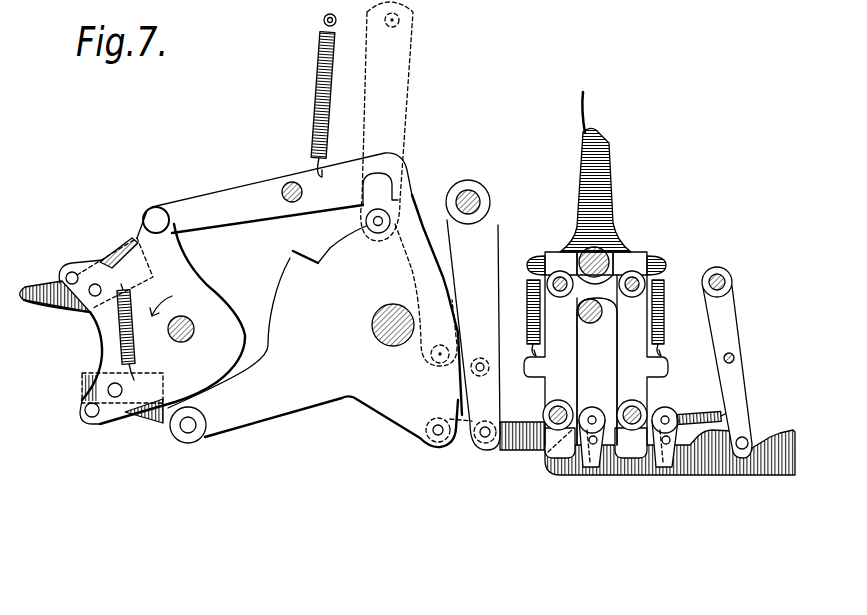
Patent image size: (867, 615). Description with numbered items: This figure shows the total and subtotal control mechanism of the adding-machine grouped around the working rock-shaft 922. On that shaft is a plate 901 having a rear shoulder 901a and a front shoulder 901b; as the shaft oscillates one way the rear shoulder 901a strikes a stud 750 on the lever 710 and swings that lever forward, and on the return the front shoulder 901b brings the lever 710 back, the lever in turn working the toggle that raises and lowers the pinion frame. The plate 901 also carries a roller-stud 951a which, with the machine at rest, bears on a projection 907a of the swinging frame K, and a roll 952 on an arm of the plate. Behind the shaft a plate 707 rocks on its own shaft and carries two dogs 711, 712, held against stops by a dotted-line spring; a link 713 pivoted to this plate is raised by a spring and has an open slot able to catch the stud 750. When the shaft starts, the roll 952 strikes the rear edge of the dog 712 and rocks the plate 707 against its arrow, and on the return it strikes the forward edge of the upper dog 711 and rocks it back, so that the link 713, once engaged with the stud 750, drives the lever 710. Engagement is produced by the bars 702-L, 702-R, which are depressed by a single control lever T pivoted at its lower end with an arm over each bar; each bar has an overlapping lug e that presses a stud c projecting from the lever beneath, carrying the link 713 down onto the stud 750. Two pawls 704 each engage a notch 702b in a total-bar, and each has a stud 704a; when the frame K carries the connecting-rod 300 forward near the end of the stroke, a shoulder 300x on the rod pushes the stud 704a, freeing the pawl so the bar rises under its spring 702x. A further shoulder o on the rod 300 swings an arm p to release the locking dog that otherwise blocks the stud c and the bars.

The longitudinal rod 300 is at (779, 477).
The shoulder of connecting-rod 300x is at (570, 472).
The link 713 is at (236, 187).
The lever 710 is at (409, 121).
The stud 750 is at (366, 226).
The rear shoulder 901a is at (410, 200).
The front shoulder 901b is at (291, 251).
The plate 901 is at (279, 335).
The working rock-shaft 922 is at (375, 335).
The plate 707 is at (190, 344).
The upper dog 711 is at (57, 311).
The dog 712 is at (137, 417).
The roll 952 is at (195, 444).
The roller-stud 951a is at (426, 441).
The projection 907a is at (460, 447).
The swinging frame K is at (455, 258).
The subtotal-bar 702-L is at (556, 252).
The total-bar 702-R is at (642, 252).
The spring 702x is at (548, 246).
The lever T is at (606, 162).
The projection e is at (575, 298).
The stud c is at (592, 320).
The notch 702b is at (547, 452).
The pawl 704 is at (603, 399).
The stud 704a is at (592, 468).
The arm p is at (738, 333).
The shoulder o is at (749, 434).